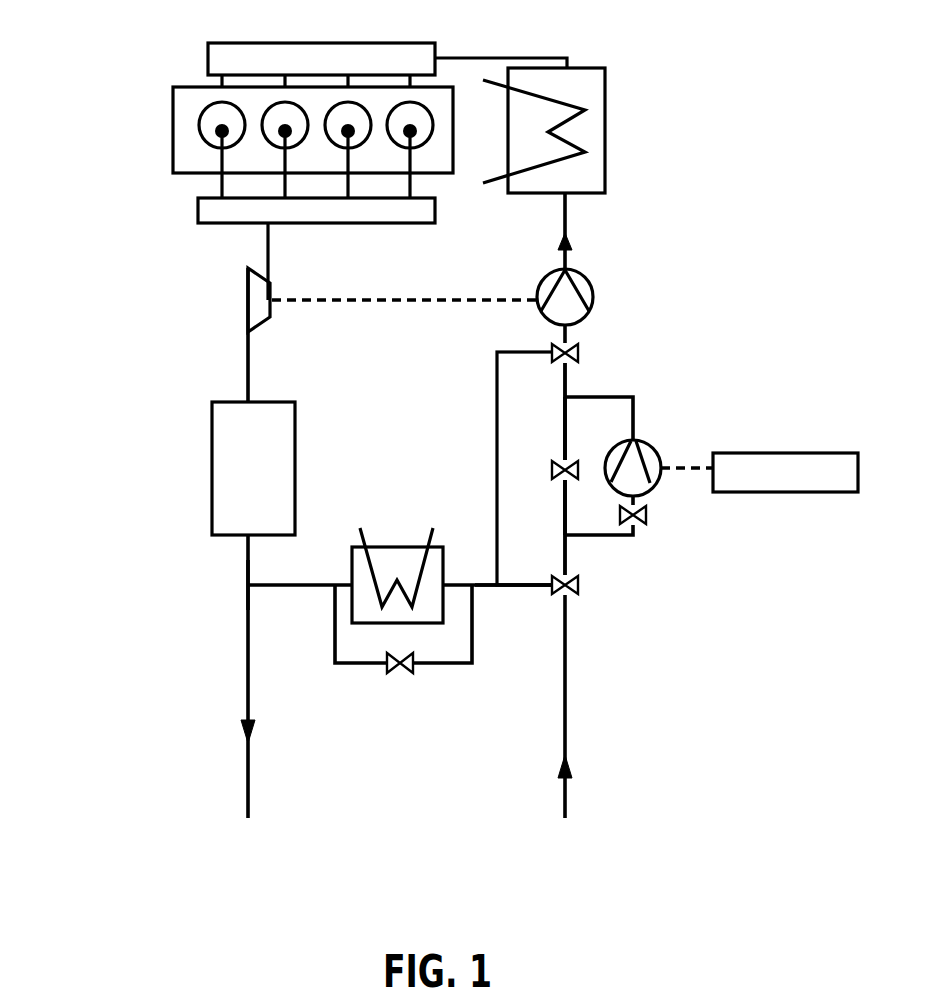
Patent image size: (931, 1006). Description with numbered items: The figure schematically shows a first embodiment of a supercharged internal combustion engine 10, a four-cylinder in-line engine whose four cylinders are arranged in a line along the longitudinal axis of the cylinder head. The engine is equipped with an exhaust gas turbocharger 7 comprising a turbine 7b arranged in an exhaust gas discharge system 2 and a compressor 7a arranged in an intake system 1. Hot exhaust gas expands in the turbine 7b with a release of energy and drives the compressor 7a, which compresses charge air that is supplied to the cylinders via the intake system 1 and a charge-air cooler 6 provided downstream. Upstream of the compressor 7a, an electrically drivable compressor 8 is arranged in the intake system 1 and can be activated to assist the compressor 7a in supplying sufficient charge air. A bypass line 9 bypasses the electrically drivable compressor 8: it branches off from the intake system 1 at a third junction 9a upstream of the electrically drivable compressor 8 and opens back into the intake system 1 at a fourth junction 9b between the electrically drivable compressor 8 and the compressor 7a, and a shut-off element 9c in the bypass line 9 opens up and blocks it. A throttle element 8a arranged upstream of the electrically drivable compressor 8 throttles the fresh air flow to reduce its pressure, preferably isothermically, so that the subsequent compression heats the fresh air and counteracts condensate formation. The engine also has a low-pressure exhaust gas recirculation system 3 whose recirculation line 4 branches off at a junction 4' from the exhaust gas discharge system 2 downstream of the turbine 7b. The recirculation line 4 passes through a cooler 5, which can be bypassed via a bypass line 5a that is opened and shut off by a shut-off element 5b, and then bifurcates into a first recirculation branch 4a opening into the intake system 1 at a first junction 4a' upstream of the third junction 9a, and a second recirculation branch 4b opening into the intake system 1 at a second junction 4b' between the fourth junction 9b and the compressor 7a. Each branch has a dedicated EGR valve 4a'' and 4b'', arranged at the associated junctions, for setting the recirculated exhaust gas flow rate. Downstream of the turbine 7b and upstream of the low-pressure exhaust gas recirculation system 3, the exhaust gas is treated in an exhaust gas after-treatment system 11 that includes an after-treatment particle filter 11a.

The intake system 1 is at (750, 358).
The exhaust gas discharge system 2 is at (124, 377).
The low-pressure exhaust gas recirculation system 3 is at (472, 529).
The recirculation line 4 is at (406, 539).
The junction 4' is at (215, 604).
The first recirculation branch 4a is at (531, 622).
The first junction 4a' is at (629, 604).
The EGR valve 4a'' is at (629, 604).
The second recirculation branch 4b is at (502, 468).
The second junction 4b' is at (628, 335).
The EGR valve 4b'' is at (628, 335).
The cooler 5 is at (380, 548).
The bypass line 5a is at (345, 665).
The shut-off element 5b is at (402, 670).
The charge-air cooler 6 is at (607, 83).
The exhaust gas turbocharger 7 is at (412, 294).
The compressor 7a is at (585, 279).
The turbine 7b is at (247, 312).
The electrically drivable compressor 8 is at (652, 447).
The throttle element 8a is at (646, 525).
The bypass line 9 is at (565, 423).
The third junction 9a is at (565, 535).
The fourth junction 9b is at (567, 392).
The shut-off element 9c is at (560, 481).
The internal combustion engine 10 is at (122, 40).
The exhaust gas after-treatment system 11 is at (199, 475).
The after-treatment particle filter 11a is at (212, 462).